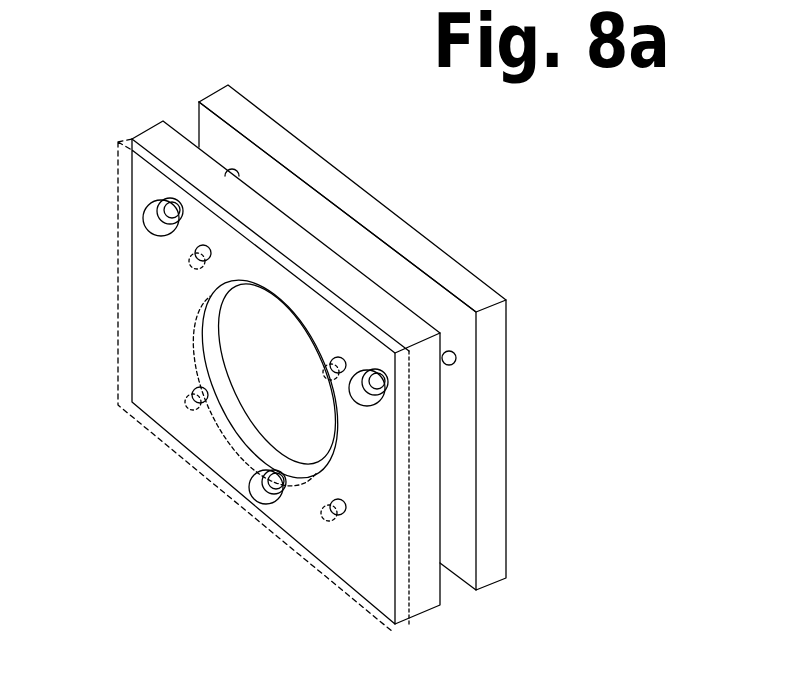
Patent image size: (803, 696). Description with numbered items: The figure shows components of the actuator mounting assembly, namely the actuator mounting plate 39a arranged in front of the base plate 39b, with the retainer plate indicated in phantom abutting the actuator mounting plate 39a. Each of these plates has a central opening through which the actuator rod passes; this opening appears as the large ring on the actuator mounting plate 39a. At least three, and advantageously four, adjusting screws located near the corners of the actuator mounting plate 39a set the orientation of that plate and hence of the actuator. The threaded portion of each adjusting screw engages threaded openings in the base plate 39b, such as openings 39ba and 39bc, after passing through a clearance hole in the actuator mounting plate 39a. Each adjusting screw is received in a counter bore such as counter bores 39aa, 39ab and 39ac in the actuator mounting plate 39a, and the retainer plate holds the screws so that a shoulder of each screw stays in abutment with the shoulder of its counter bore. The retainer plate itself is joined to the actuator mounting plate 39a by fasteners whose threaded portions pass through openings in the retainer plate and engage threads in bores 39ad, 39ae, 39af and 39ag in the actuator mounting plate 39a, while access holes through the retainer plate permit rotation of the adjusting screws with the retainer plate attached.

The actuator mounting plate 39a is at (420, 602).
The base plate 39b is at (490, 567).
The counter bore 39aa is at (150, 216).
The counter bore 39ab is at (258, 484).
The counter bore 39ac is at (372, 372).
The threaded bore 39ad is at (145, 268).
The threaded bore 39ae is at (162, 402).
The threaded bore 39af is at (332, 513).
The threaded bore 39ag is at (339, 357).
The threaded opening 39ba is at (240, 177).
The threaded opening 39bc is at (452, 351).